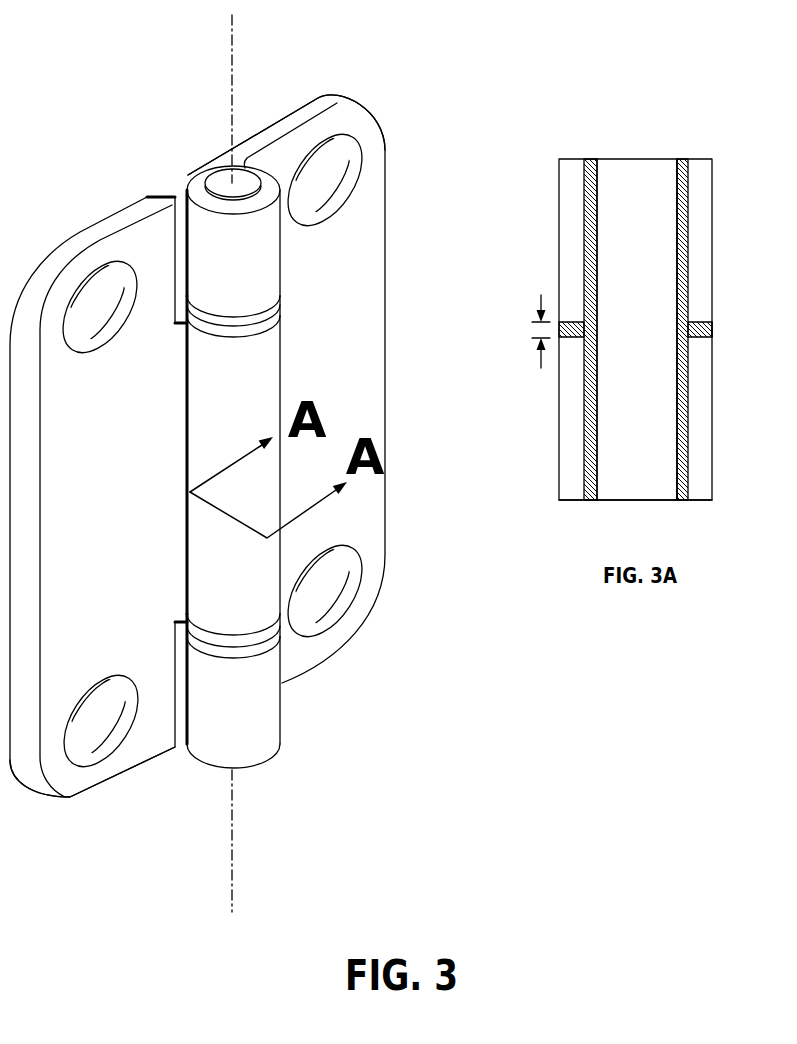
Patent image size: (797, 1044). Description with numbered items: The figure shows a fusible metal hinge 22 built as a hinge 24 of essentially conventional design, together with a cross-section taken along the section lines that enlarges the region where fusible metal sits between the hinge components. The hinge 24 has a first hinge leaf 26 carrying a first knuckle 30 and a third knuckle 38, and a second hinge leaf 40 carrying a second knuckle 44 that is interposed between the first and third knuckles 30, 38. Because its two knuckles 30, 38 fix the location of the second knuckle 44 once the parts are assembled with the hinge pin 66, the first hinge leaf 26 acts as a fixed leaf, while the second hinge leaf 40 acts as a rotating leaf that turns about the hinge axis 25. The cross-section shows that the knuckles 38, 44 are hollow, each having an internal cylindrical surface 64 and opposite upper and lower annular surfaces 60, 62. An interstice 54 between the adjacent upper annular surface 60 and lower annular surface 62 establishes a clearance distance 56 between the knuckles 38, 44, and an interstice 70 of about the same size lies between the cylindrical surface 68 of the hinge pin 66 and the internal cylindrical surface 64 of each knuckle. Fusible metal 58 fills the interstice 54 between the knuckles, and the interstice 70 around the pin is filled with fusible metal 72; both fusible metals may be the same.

In FIG. 3, the fusible metal hinge 22 is at (155, 826).
In FIG. 3, the hinge 24 is at (158, 64).
In FIG. 3, the hinge axis 25 is at (232, 57).
In FIG. 3, the first hinge leaf 26 is at (95, 515).
In FIG. 3, the first knuckle 30 is at (217, 247).
In FIG. 3, the third knuckle 38 is at (220, 420).
In FIG. 3, the second hinge leaf 40 is at (319, 374).
In FIG. 3, the second knuckle 44 is at (220, 727).
In FIG. 3A, the interstice 54 is at (727, 339).
In FIG. 3A, the clearance distance 56 is at (520, 332).
In FIG. 3A, the fusible metal 58 is at (568, 330).
In FIG. 3A, the upper annular surface 60 is at (682, 328).
In FIG. 3A, the lower annular surface 62 is at (700, 328).
In FIG. 3A, the internal cylindrical surface 64 is at (682, 203).
In FIG. 3A, the hinge pin 66 is at (625, 177).
In FIG. 3A, the cylindrical surface 68 is at (682, 268).
In FIG. 3A, the interstice 70 is at (589, 516).
In FIG. 3A, the fusible metal 72 is at (682, 297).